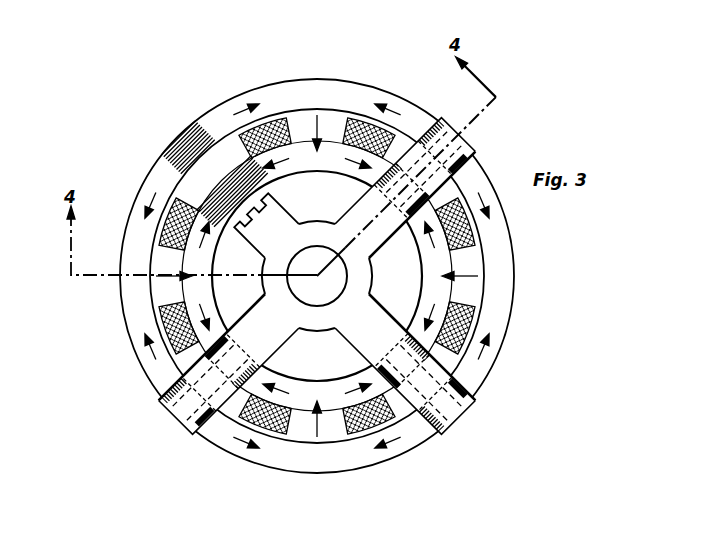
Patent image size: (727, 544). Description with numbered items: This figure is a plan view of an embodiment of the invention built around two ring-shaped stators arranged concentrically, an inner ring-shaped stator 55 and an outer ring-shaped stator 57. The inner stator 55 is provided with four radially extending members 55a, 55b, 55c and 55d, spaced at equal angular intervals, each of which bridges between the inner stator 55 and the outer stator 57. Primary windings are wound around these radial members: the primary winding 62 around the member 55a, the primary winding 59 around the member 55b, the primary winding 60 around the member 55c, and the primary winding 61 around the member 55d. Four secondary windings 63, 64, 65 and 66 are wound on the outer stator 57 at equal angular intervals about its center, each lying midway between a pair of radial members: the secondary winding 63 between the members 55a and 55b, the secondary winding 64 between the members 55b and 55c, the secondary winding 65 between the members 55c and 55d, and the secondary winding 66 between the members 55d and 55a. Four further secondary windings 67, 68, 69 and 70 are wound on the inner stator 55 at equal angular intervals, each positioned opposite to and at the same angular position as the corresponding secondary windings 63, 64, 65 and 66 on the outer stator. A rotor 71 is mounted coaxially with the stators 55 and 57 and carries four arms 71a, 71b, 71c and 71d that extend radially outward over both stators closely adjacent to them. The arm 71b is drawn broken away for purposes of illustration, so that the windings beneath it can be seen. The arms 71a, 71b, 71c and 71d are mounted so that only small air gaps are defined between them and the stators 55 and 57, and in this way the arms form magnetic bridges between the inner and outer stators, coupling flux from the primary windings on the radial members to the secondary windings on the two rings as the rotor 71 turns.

The inner ring-shaped stator 55 is at (317, 276).
The radially extending member 55a is at (316, 440).
The radially extending member 55b is at (142, 275).
The radially extending member 55c is at (330, 115).
The radially extending member 55d is at (495, 275).
The outer ring-shaped stator 57 is at (299, 276).
The primary winding 59 is at (143, 225).
The primary winding 60 is at (283, 102).
The primary winding 61 is at (487, 225).
The primary winding 62 is at (266, 447).
The secondary winding 63 is at (208, 444).
The secondary winding 64 is at (189, 122).
The secondary winding 65 is at (480, 157).
The secondary winding 66 is at (485, 391).
The secondary winding 67 is at (150, 395).
The secondary winding 68 is at (226, 173).
The secondary winding 69 is at (439, 115).
The secondary winding 70 is at (430, 445).
The rotor 71 is at (317, 276).
The rotor arm 71a is at (208, 371).
The rotor arm 71b is at (281, 225).
The rotor arm 71c is at (428, 188).
The rotor arm 71d is at (424, 367).